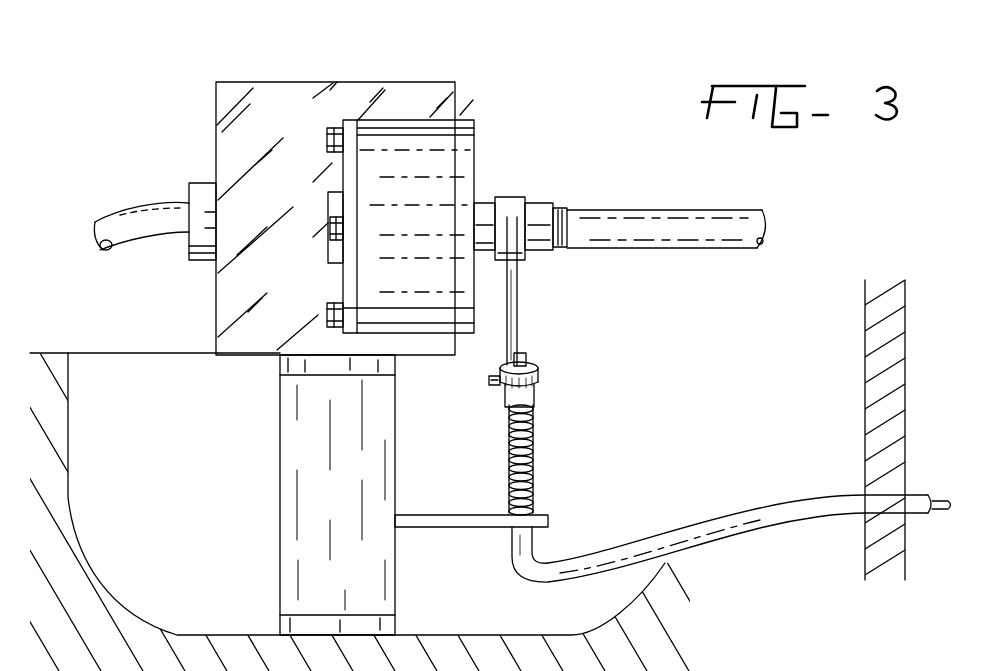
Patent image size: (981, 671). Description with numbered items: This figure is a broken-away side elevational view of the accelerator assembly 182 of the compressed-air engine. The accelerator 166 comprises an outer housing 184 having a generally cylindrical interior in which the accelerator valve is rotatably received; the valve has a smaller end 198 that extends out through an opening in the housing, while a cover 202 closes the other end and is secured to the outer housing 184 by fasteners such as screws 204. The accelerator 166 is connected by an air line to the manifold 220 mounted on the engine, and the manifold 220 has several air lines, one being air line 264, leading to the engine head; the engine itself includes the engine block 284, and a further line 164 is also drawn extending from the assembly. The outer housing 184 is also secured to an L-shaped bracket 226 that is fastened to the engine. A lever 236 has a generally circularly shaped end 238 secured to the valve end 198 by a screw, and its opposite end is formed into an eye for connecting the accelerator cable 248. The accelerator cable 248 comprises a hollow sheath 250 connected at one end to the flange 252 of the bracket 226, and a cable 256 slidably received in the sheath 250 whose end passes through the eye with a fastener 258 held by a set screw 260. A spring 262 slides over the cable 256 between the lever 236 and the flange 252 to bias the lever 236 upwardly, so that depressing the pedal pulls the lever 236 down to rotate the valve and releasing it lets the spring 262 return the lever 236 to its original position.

The conduit 164 is at (672, 223).
The accelerator 166 is at (433, 180).
The accelerator assembly 182 is at (558, 145).
The outer housing 184 is at (453, 142).
The end 198 is at (485, 213).
The cover 202 is at (335, 207).
The screws 204 is at (333, 142).
The manifold 220 is at (251, 92).
The L-shaped bracket 226 is at (315, 460).
The lever 236 is at (513, 317).
The circularly shaped end 238 is at (513, 205).
The accelerator cable 248 is at (721, 514).
The hollow sheath 250 is at (713, 522).
The flange 252 is at (433, 520).
The cable 256 is at (523, 355).
The fastener 258 is at (533, 395).
The set screw 260 is at (492, 385).
The spring 262 is at (509, 437).
The air line 264 is at (153, 220).
The engine block 284 is at (80, 572).